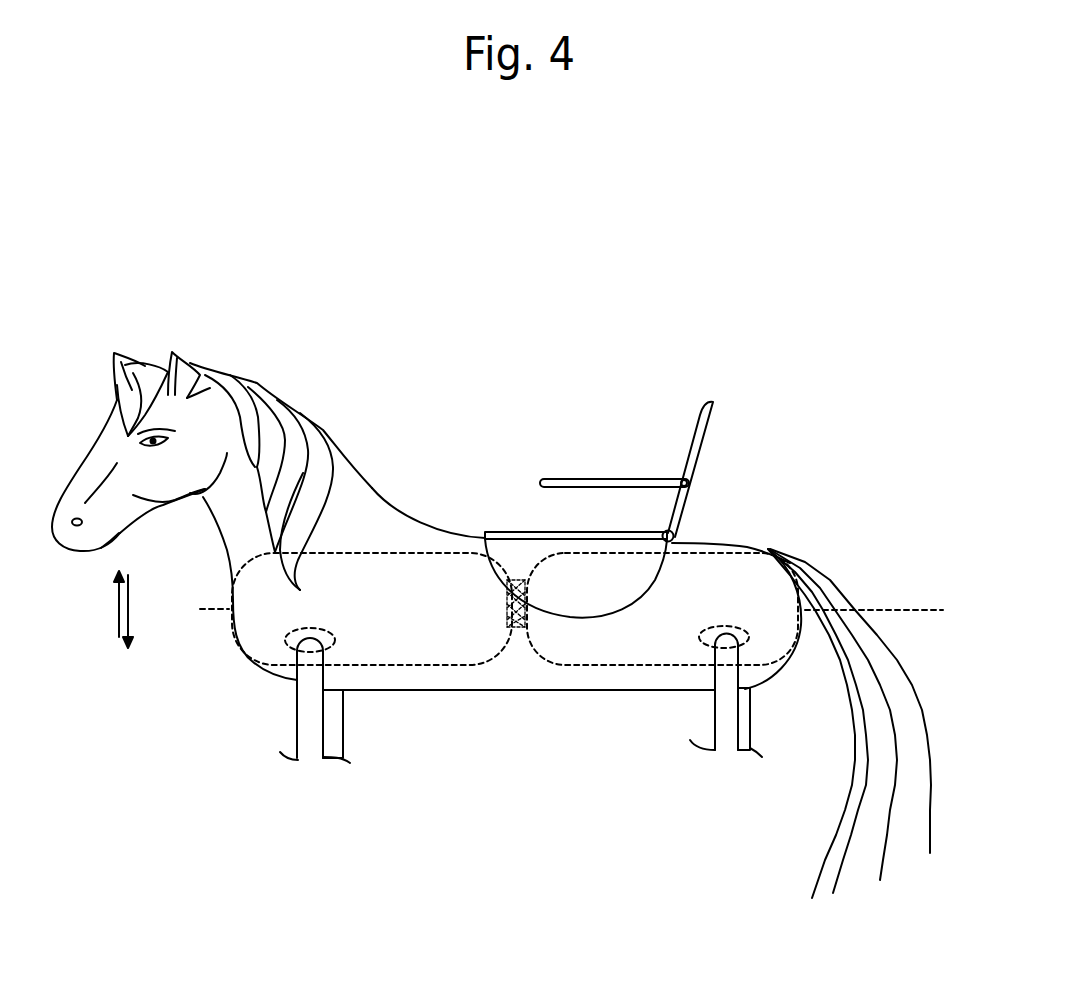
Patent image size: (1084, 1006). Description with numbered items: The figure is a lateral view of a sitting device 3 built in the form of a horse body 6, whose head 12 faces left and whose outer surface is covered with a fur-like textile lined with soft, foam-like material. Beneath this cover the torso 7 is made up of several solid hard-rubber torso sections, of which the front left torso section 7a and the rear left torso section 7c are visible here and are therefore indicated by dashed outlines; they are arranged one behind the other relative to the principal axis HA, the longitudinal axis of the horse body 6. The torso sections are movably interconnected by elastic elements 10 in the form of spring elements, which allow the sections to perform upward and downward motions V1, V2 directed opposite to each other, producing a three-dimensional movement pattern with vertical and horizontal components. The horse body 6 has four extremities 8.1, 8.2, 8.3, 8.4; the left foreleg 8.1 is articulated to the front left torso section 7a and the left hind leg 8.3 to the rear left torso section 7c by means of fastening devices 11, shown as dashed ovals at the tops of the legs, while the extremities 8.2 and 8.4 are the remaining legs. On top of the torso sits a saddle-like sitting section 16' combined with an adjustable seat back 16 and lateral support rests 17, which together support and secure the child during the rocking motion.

The sitting device 3 is at (220, 253).
The animal head 12 is at (193, 403).
The horse body 6 is at (392, 461).
The body 7 is at (573, 702).
The front left torso section 7a is at (400, 585).
The rear left torso section 7c is at (752, 571).
The elastic element 10 is at (517, 628).
The fastening device 11 is at (290, 647).
The left foreleg 8.1 is at (300, 727).
The extremity 8.2 is at (335, 737).
The left hind leg 8.3 is at (720, 708).
The extremity 8.4 is at (741, 722).
The sitting section 16' is at (574, 529).
The seat back 16 is at (725, 464).
The lateral support rest 17 is at (584, 478).
The principal axis HA is at (578, 596).
The upward motion V1 is at (103, 604).
The downward motion V2 is at (143, 611).